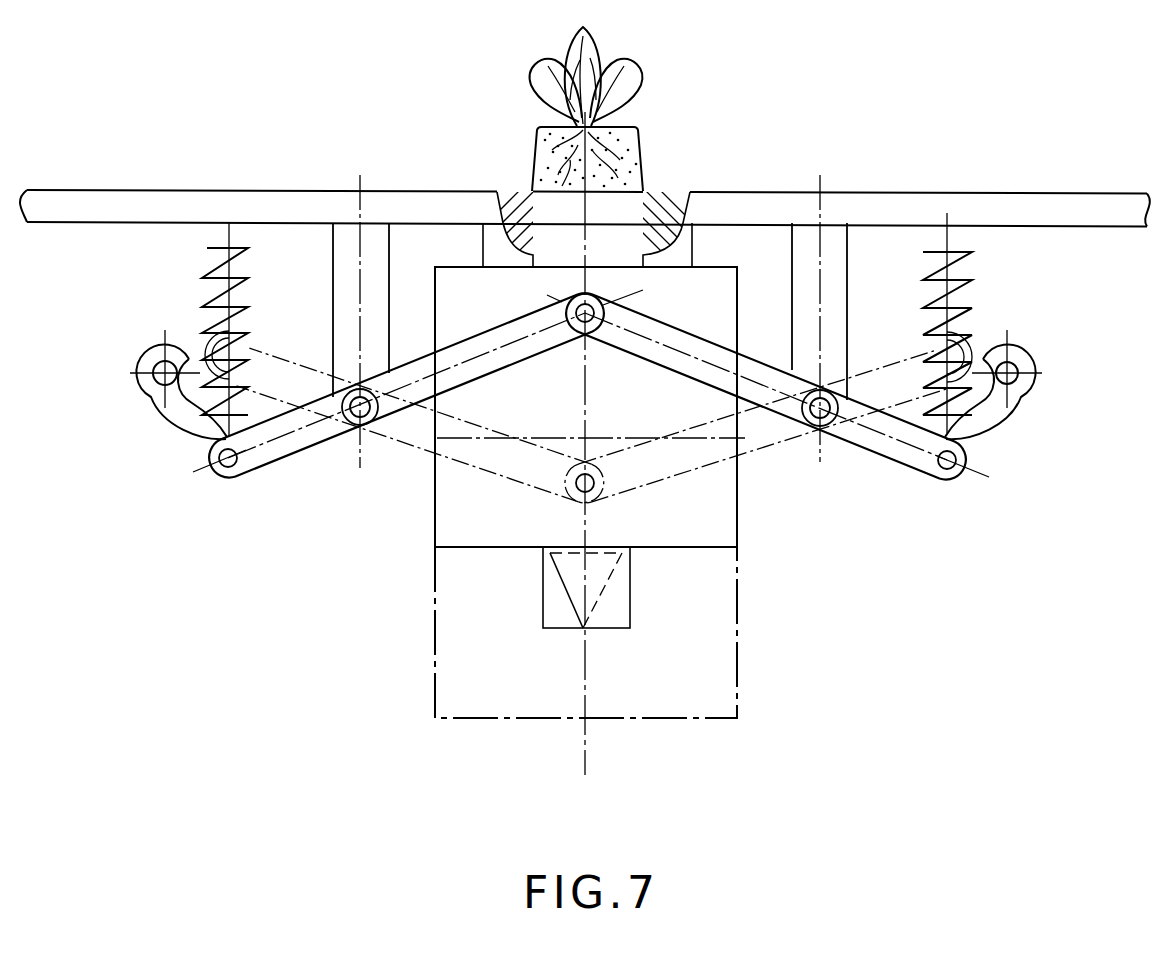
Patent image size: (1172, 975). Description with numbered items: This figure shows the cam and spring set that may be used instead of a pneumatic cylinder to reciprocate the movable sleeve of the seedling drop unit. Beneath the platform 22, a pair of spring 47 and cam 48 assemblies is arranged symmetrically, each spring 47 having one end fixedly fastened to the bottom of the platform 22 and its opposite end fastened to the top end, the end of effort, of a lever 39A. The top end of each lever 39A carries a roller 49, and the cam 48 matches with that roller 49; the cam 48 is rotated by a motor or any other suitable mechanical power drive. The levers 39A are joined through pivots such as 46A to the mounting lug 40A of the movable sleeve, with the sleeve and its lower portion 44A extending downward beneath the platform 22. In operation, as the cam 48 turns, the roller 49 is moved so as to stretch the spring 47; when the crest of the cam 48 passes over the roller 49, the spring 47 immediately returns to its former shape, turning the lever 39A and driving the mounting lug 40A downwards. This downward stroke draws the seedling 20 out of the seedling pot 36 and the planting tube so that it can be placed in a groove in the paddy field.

The seedling 20 is at (627, 175).
The platform 22 is at (1035, 212).
The seedling pot 36 is at (533, 170).
The spring 47 is at (957, 250).
The cam 48 is at (1017, 395).
The roller 49 is at (947, 462).
The lever 39A is at (915, 457).
The mounting lug 40A is at (475, 513).
The actuator 44A is at (563, 617).
The pivot 46A is at (820, 415).